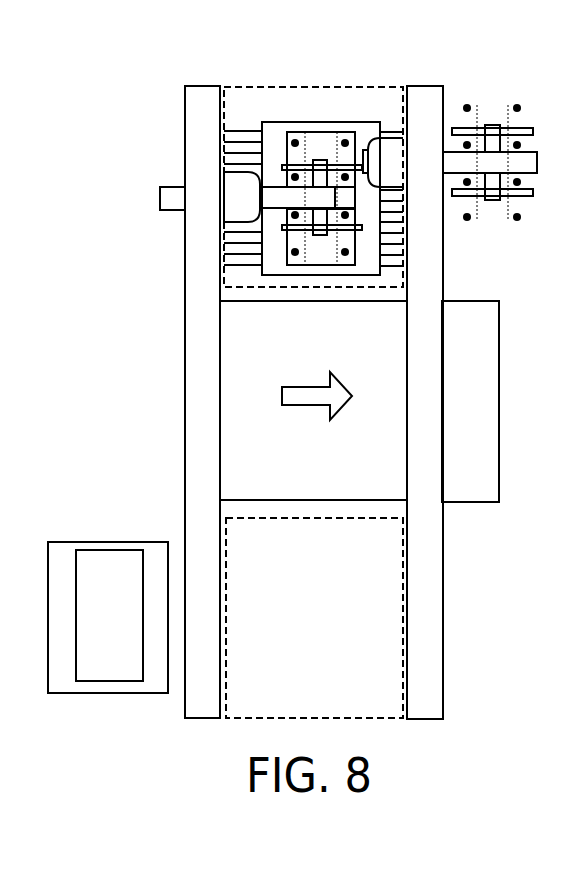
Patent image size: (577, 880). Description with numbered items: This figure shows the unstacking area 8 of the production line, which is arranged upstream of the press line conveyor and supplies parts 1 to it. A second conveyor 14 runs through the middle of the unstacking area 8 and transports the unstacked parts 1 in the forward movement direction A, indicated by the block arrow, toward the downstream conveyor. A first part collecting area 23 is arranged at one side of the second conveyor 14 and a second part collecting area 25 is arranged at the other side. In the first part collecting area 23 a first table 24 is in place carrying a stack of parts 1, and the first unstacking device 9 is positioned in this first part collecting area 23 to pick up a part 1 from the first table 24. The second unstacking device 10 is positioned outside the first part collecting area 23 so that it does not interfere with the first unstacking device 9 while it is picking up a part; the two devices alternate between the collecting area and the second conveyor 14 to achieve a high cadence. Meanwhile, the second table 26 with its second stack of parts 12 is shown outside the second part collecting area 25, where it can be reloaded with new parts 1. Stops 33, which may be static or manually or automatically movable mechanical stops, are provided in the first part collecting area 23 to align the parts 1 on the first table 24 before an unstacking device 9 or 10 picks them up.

The part 1 is at (317, 152).
The unstacking area 8 is at (170, 400).
The first unstacking device 9 is at (242, 197).
The second unstacking device 10 is at (477, 165).
The second stack of parts 12 is at (95, 578).
The second conveyor 14 is at (323, 362).
The first part collecting area 23 is at (252, 112).
The first table 24 is at (253, 272).
The second part collecting area 25 is at (302, 615).
The second table 26 is at (62, 592).
The stops 33 is at (238, 137).
The forward movement direction A is at (342, 407).